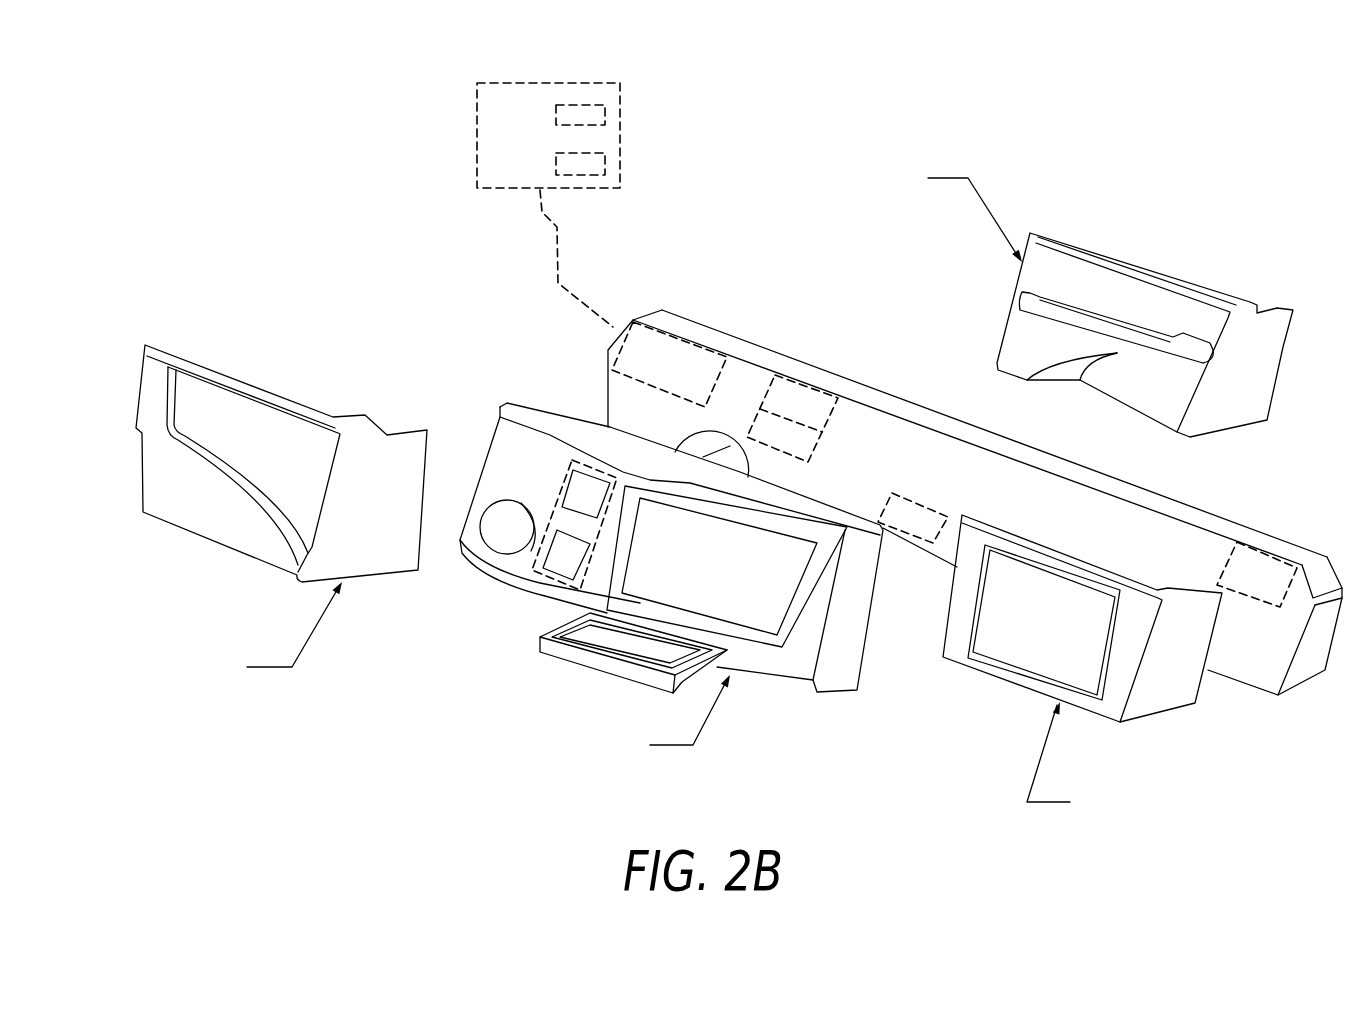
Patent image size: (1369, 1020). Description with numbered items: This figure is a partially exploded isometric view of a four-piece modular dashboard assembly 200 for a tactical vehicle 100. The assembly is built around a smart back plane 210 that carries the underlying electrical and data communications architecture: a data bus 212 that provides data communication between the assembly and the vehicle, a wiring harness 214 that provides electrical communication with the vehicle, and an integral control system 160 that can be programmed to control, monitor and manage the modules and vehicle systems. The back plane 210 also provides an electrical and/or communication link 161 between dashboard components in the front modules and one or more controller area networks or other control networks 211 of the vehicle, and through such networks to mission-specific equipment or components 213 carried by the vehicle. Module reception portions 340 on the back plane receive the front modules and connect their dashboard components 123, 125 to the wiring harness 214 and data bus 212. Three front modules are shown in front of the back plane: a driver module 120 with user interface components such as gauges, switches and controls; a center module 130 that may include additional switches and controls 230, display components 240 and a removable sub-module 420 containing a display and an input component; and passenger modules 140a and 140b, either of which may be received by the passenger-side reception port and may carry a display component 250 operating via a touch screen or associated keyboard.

The vehicle 100 is at (566, 83).
The control networks 211 is at (612, 110).
The mission-specific equipment or components 213 is at (612, 158).
The dashboard assembly 200 is at (363, 186).
The back plane 210 is at (683, 328).
The data bus 212 is at (797, 398).
The wiring harness 214 is at (863, 440).
The module reception portions 340 is at (708, 367).
The integral control system 160 is at (922, 512).
The electrical and/or communication link 161 is at (937, 517).
The driver module 120 is at (208, 362).
The dashboard component 123 is at (277, 437).
The dashboard component 125 is at (247, 453).
The center module 130 is at (549, 411).
The user interface components 230 is at (555, 562).
The display components 240 is at (753, 625).
The sub-module 420 is at (550, 588).
The display component 250 is at (1017, 642).
The passenger module 140a is at (1307, 677).
The passenger module 140b is at (1190, 282).